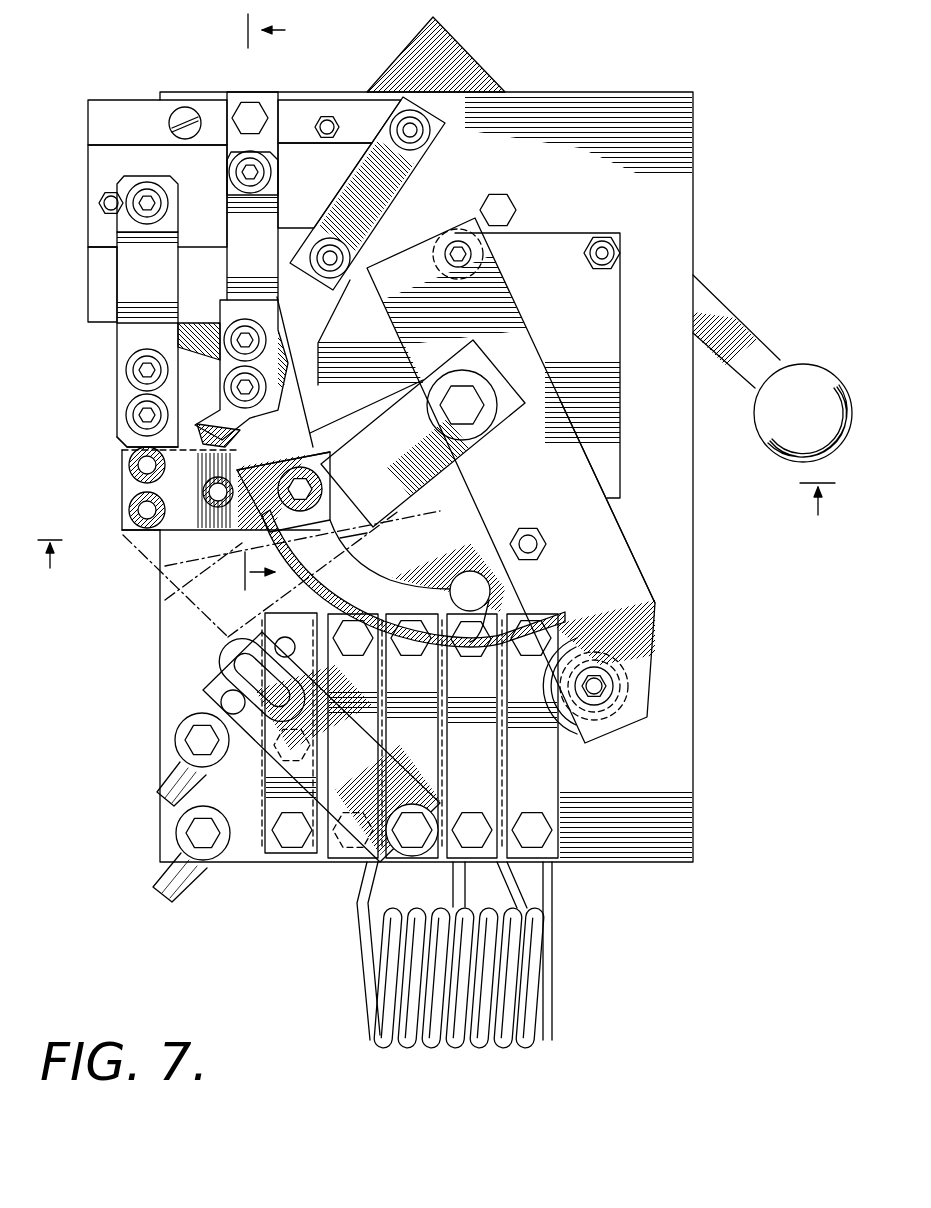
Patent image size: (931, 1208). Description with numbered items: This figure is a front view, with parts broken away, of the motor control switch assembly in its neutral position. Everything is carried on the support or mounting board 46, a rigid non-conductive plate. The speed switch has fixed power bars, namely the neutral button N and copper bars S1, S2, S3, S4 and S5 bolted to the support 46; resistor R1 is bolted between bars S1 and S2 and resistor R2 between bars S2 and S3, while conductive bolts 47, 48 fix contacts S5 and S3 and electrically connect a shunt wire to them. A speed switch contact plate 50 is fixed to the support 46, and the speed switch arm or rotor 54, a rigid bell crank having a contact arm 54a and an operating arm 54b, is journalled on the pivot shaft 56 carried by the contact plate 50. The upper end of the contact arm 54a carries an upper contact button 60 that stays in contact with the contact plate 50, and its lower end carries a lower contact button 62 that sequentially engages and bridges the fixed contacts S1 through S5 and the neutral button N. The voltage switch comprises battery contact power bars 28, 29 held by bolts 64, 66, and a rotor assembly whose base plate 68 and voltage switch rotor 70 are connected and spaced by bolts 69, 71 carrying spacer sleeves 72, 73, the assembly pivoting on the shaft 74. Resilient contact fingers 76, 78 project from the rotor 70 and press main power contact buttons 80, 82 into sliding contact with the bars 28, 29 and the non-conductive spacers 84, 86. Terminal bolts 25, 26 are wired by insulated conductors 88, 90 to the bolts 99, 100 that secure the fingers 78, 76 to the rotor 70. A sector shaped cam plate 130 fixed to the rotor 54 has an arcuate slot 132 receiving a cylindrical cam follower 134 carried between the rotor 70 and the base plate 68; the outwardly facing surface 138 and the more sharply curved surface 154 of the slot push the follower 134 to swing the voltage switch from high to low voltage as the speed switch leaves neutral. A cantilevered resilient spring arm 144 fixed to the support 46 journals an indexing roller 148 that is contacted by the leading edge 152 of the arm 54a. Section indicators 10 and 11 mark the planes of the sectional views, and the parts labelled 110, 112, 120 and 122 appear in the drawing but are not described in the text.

The section line 10- 10 is at (426, 540).
The section line 11- 11 is at (284, 307).
The bolt 25 is at (192, 833).
The bolt 26 is at (190, 738).
The battery contact power bar 28 is at (246, 96).
The battery contact power bar 29 is at (400, 190).
The support or mounting board 46 is at (697, 750).
The electrically conductive bolt 47 is at (291, 842).
The electrically conductive bolt 48 is at (400, 658).
The speed switch contact plate 50 is at (622, 358).
The speed switch arm or rotor 54 is at (547, 337).
The contact arm 54a is at (628, 540).
The operating arm 54b is at (195, 607).
The pivot shaft 56 is at (460, 372).
The upper contact button 60 is at (462, 287).
The lower contact button 62 is at (614, 686).
The bolt 64 is at (260, 104).
The bolt 66 is at (425, 128).
The base plate 68 is at (122, 488).
The bolt 69 is at (130, 522).
The voltage switch arm or rotor 70 is at (117, 398).
The bolt 71 is at (128, 464).
The spacer sleeve 72 is at (128, 508).
The spacer sleeve 73 is at (118, 452).
The shaft 74 is at (212, 500).
The resilient contact finger 76 is at (125, 272).
The resilient contact finger 78 is at (280, 306).
The main power contact button 80 is at (117, 229).
The main power contact button 82 is at (227, 160).
The electrically non-conductive spacer 84 is at (322, 194).
The electrically non-conductive spacer 86 is at (88, 160).
The insulated conductor 88 is at (160, 884).
The insulated conductor 90 is at (162, 790).
The bolt 99 is at (240, 385).
The bolt 100 is at (140, 370).
The bracket 110 is at (456, 40).
The handle knob 112 is at (806, 364).
The pivot pin 120 is at (445, 245).
The nut 122 is at (620, 252).
The sector shaped cam plate 130 is at (462, 517).
The arcuate slot 132 is at (370, 573).
The cylindrical cam follower 134 is at (372, 548).
The outwardly facing surface 138 is at (305, 468).
The cantilevered resilient spring arm 144 is at (288, 768).
The cam or camming roller 148 is at (228, 652).
The leading edge 152 is at (575, 745).
The sharply curved cam surface 154 is at (367, 533).
The copper bar S1 is at (540, 772).
The copper bar S2 is at (480, 756).
The copper bar S3 is at (420, 730).
The copper bar S4 is at (362, 686).
The copper bar S5 is at (270, 796).
The resistor R1 is at (548, 957).
The resistor R2 is at (358, 962).
The neutral button N is at (618, 656).